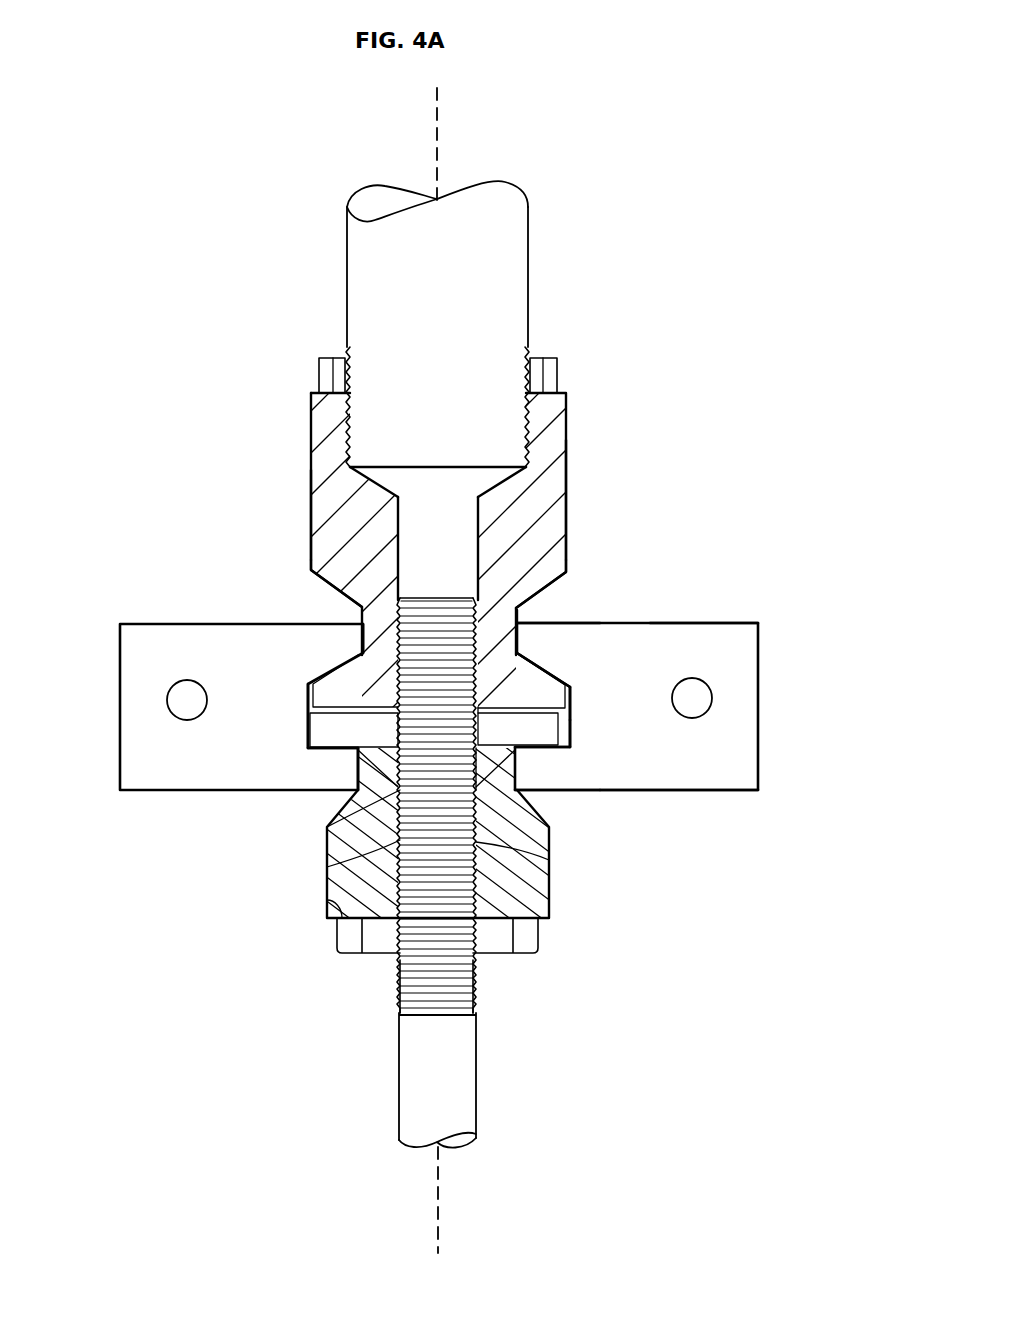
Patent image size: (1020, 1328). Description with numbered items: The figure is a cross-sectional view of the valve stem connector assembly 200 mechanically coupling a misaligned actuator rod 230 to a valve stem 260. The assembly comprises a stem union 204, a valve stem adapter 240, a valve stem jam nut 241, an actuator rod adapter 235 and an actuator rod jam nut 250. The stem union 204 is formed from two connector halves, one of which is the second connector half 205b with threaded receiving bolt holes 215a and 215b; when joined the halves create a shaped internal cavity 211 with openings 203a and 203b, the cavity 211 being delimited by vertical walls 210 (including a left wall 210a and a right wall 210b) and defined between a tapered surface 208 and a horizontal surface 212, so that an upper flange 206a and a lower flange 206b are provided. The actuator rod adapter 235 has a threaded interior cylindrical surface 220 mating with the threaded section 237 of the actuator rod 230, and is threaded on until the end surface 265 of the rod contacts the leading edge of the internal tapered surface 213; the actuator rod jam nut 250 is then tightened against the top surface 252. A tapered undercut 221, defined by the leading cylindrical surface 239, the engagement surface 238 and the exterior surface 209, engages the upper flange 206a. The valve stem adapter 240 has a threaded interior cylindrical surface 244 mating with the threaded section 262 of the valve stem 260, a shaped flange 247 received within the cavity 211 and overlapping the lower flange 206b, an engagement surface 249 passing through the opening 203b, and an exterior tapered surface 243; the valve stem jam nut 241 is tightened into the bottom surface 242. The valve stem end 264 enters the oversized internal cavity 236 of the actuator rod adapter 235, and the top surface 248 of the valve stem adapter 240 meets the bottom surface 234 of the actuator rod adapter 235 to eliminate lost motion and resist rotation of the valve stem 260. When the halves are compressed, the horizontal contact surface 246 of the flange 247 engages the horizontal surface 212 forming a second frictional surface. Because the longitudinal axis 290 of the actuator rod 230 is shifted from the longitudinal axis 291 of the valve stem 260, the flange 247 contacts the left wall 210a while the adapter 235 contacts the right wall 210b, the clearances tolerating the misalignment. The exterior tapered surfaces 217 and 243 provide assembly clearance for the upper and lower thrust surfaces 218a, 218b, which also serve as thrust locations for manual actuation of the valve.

The valve stem connector assembly 200 is at (135, 440).
The opening 203a is at (358, 645).
The opening 203b is at (356, 766).
The stem union 204 is at (163, 798).
The second connector half 205b is at (760, 775).
The upper flange 206a is at (520, 638).
The lower flange 206b is at (522, 776).
The tapered surface 208 is at (545, 668).
The exterior surface 209 is at (550, 660).
The vertical walls 210 is at (572, 728).
The left wall 210a is at (312, 733).
The right wall 210b is at (572, 695).
The shaped internal cavity 211 is at (310, 692).
The horizontal surface 212 is at (580, 762).
The internal tapered surface 213 is at (348, 478).
The receiving bolt hole 215a is at (708, 722).
The receiving bolt hole 215b is at (173, 716).
The exterior tapered surface 217 is at (565, 585).
The upper thrust surface 218a is at (705, 622).
The lower thrust surface 218b is at (636, 792).
The threaded interior cylindrical surface 220 is at (535, 412).
The tapered undercut 221 is at (520, 613).
The actuator rod 230 is at (515, 258).
The bottom surface 234 is at (492, 708).
The actuator rod adapter 235 is at (570, 480).
The internal cavity 236 is at (452, 533).
The threaded section 237 is at (348, 352).
The engagement surface 238 is at (350, 605).
The leading cylindrical surface 239 is at (322, 698).
The valve stem adapter 240 is at (552, 900).
The valve stem jam nut 241 is at (540, 953).
The bottom surface 242 is at (327, 907).
The exterior tapered surface 243 is at (540, 818).
The threaded interior cylindrical surface 244 is at (327, 867).
The horizontal contact surface 246 is at (548, 722).
The shaped flange 247 is at (318, 745).
The top surface 248 is at (490, 715).
The engagement surface 249 is at (327, 827).
The actuator rod jam nut 250 is at (560, 370).
The actuator rod adapter top surface 252 is at (318, 390).
The valve stem 260 is at (460, 1065).
The threaded section 262 is at (478, 1000).
The valve stem end 264 is at (410, 597).
The end surface 265 is at (405, 470).
The longitudinal axis 290 is at (437, 113).
The longitudinal axis 291 is at (438, 1240).